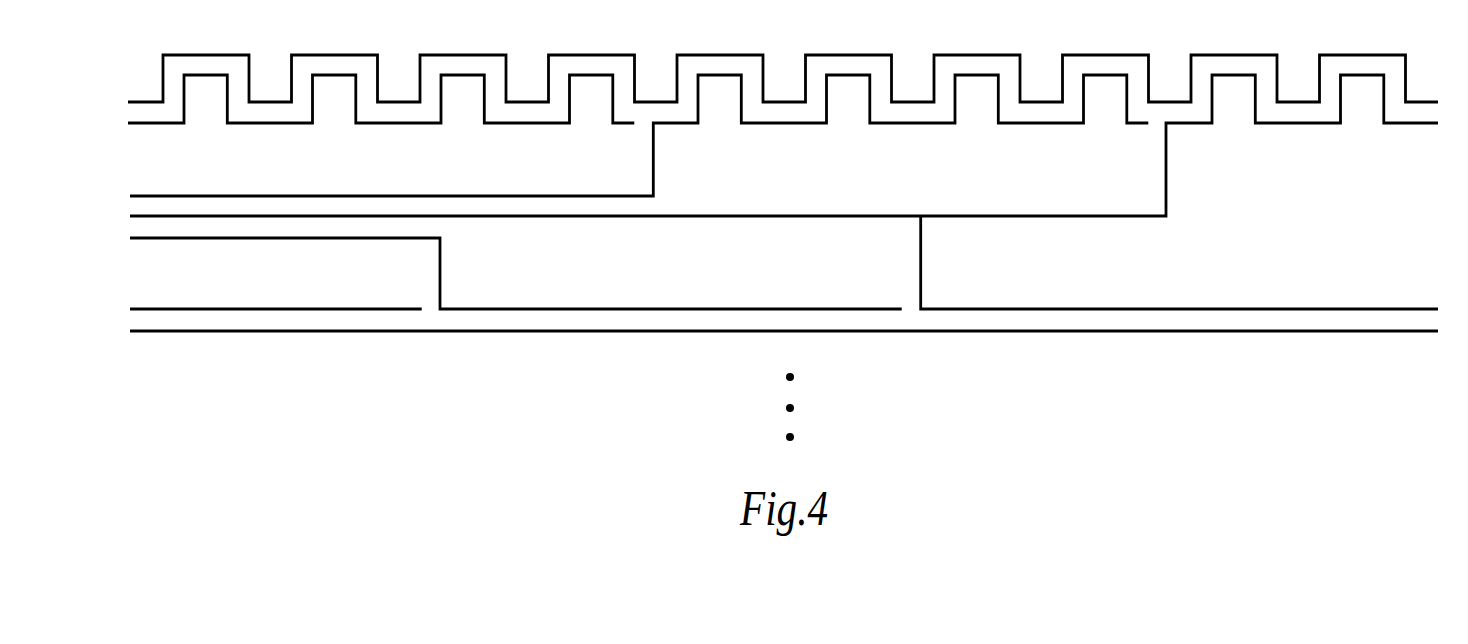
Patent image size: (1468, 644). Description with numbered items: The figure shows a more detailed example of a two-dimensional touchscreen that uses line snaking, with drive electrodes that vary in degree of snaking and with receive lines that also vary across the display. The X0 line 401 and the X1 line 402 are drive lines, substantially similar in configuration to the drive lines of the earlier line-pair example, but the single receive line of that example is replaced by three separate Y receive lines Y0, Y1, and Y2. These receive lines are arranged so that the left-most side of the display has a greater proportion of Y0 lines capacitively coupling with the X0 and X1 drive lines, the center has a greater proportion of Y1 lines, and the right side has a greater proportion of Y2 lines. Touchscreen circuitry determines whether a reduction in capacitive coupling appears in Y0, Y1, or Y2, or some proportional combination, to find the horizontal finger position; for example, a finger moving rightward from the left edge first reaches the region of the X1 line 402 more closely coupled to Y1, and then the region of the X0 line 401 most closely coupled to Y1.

The X0 line 401 is at (772, 121).
The X1 line 402 is at (772, 296).
The X0 drive line X0 is at (772, 84).
The Y0 receive line Y0 is at (370, 105).
The Y1 receive line Y1 is at (627, 141).
The Y2 receive line Y2 is at (772, 151).
The X1 drive line X1 is at (1305, 333).